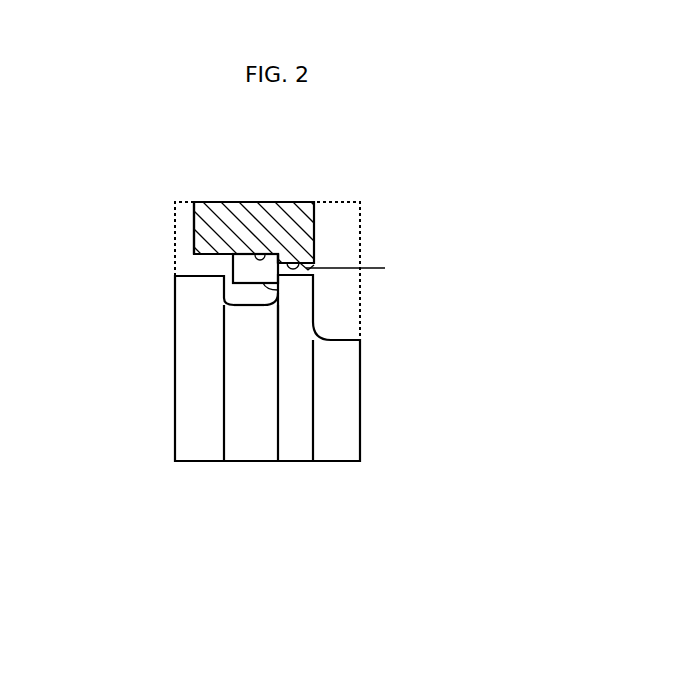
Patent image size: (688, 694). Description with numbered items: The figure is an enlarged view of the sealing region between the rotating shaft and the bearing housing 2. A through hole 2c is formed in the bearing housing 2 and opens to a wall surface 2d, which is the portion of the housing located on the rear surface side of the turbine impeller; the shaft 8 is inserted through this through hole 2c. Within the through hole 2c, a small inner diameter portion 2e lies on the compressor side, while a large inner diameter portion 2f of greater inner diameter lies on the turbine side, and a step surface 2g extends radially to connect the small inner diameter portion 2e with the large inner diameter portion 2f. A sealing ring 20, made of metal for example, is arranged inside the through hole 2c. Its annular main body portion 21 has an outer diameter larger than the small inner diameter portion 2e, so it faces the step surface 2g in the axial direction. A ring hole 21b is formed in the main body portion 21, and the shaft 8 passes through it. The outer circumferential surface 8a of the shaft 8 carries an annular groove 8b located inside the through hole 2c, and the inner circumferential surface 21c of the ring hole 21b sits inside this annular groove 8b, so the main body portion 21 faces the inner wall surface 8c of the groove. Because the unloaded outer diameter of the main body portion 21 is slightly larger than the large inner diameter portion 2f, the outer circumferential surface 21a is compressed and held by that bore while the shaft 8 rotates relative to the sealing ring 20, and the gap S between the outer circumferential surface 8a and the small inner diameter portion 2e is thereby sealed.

The bearing housing 2 is at (175, 232).
The wall surface 2d is at (194, 229).
The main body portion 21 is at (238, 254).
The sealing ring 20 is at (253, 266).
The through hole 2c is at (256, 253).
The large inner diameter portion 2f is at (262, 254).
The step surface 2g is at (282, 262).
The small inner diameter portion 2e is at (306, 262).
The outer circumferential surface 21a is at (230, 243).
The gap S is at (385, 268).
The ring hole 21b is at (284, 279).
The inner circumferential surface 21c is at (278, 290).
The shaft 8 is at (338, 407).
The outer circumferential surface 8a is at (215, 273).
The annular groove 8b is at (247, 303).
The inner wall surface 8c is at (277, 297).